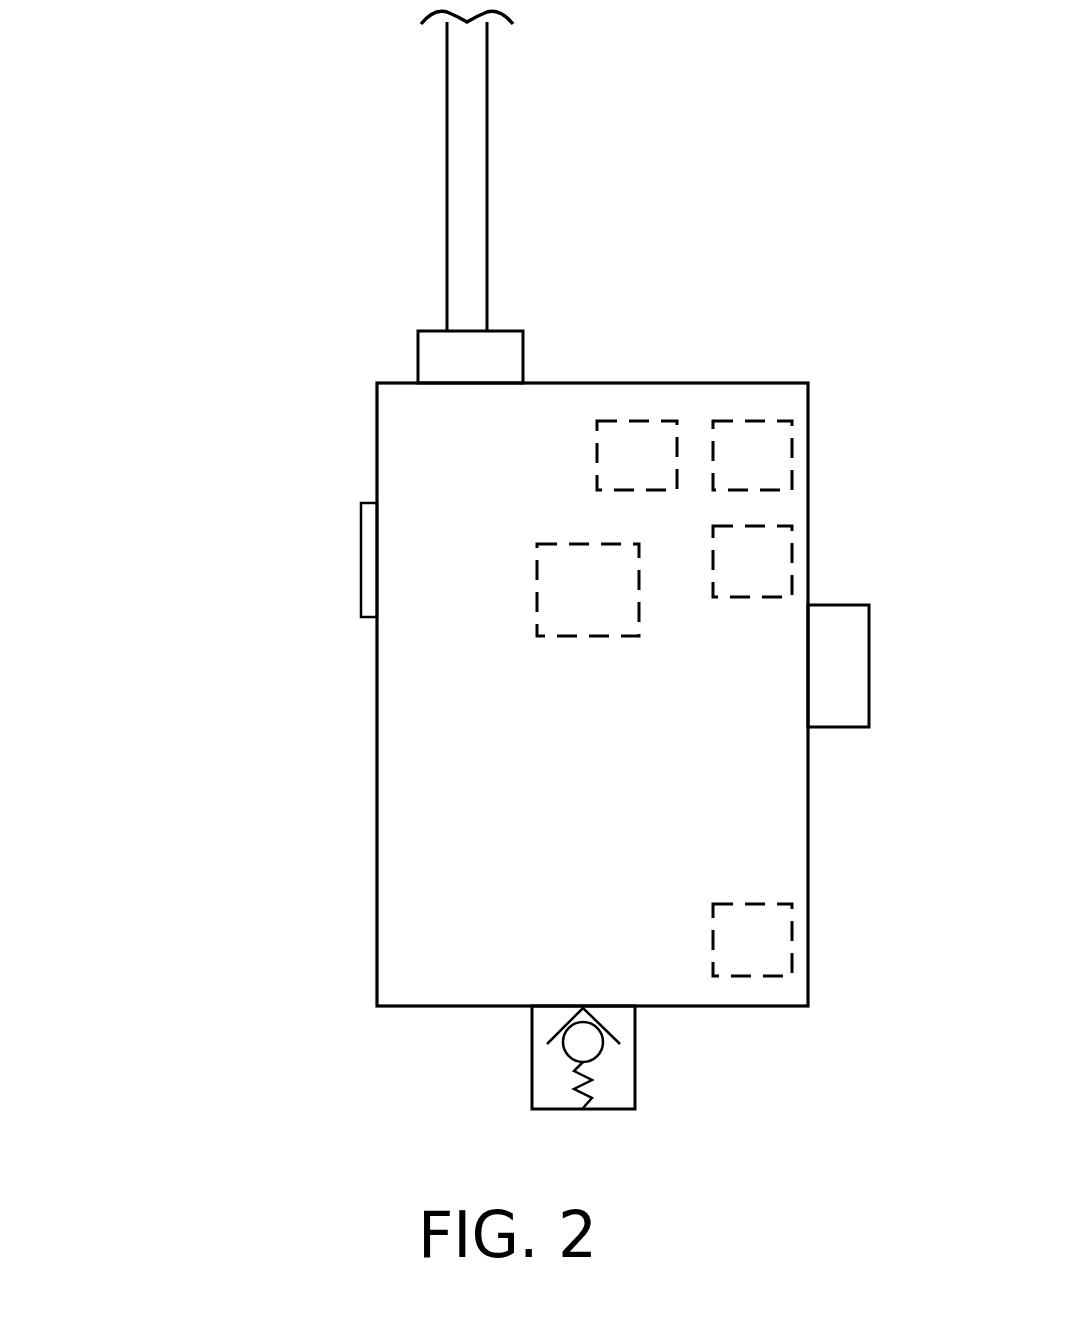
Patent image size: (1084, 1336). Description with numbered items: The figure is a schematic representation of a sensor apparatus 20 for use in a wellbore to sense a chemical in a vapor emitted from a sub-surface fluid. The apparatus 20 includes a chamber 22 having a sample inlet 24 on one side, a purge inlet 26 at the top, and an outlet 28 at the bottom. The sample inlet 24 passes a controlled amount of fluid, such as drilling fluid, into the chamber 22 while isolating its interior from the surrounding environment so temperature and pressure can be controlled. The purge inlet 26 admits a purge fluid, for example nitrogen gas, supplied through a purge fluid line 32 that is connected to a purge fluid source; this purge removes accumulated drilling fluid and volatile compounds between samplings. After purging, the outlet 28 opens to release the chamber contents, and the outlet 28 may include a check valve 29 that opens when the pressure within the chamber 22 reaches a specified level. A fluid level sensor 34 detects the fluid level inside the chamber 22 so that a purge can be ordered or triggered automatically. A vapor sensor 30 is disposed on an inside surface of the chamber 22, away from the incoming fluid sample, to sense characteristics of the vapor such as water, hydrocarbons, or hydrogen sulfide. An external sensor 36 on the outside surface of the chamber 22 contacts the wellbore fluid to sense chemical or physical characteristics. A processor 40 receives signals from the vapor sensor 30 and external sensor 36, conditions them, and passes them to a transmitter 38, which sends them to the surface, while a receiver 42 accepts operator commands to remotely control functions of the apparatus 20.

The sensor apparatus 20 is at (146, 468).
The chamber 22 is at (407, 722).
The sample inlet 24 is at (869, 660).
The purge inlet 26 is at (523, 331).
The outlet 28 is at (590, 1070).
The check valve 29 is at (575, 1040).
The vapor sensor 30 is at (613, 603).
The purge fluid line 32 is at (490, 106).
The fluid level sensor 34 is at (770, 940).
The external sensor 36 is at (361, 503).
The transmitter 38 is at (770, 452).
The processor 40 is at (637, 441).
The receiver 42 is at (770, 570).